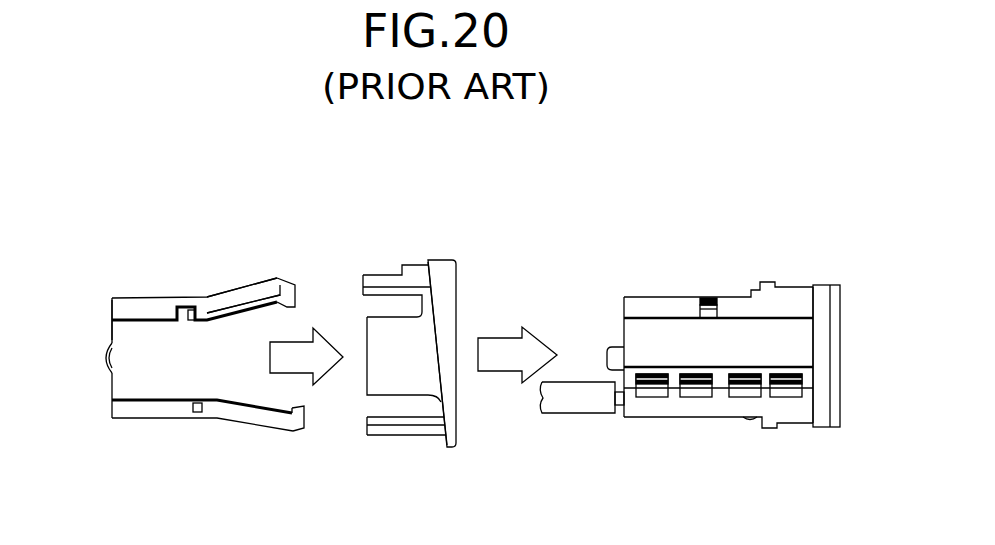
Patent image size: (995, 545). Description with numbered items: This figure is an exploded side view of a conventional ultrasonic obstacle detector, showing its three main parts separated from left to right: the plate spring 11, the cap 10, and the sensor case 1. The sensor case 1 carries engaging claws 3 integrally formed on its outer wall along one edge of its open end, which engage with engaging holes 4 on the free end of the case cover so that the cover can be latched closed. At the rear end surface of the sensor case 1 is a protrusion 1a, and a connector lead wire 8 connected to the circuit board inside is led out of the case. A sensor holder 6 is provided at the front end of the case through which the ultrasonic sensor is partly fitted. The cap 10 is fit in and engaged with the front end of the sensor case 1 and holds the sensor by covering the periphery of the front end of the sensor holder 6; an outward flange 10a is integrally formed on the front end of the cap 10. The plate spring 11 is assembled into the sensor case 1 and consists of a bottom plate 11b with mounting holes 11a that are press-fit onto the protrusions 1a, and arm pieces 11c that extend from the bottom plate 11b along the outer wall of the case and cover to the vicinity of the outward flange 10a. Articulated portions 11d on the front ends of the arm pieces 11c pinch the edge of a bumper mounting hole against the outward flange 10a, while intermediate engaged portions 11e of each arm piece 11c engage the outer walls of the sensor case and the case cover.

The sensor case 1 is at (719, 364).
The protrusions 1a is at (614, 352).
The engaging claws 3 is at (782, 372).
The engaging holes 4 is at (695, 395).
The sensor holder 6 is at (842, 428).
The connector lead wire 8 is at (588, 407).
The cap 10 is at (413, 361).
The outward flange 10a is at (445, 443).
The plate spring 11 is at (169, 353).
The mounting holes 11a is at (107, 357).
The bottom plate 11b is at (112, 328).
The arm pieces 11c is at (220, 302).
The articulated portions 11d is at (287, 290).
The engaged portions 11e is at (185, 462).